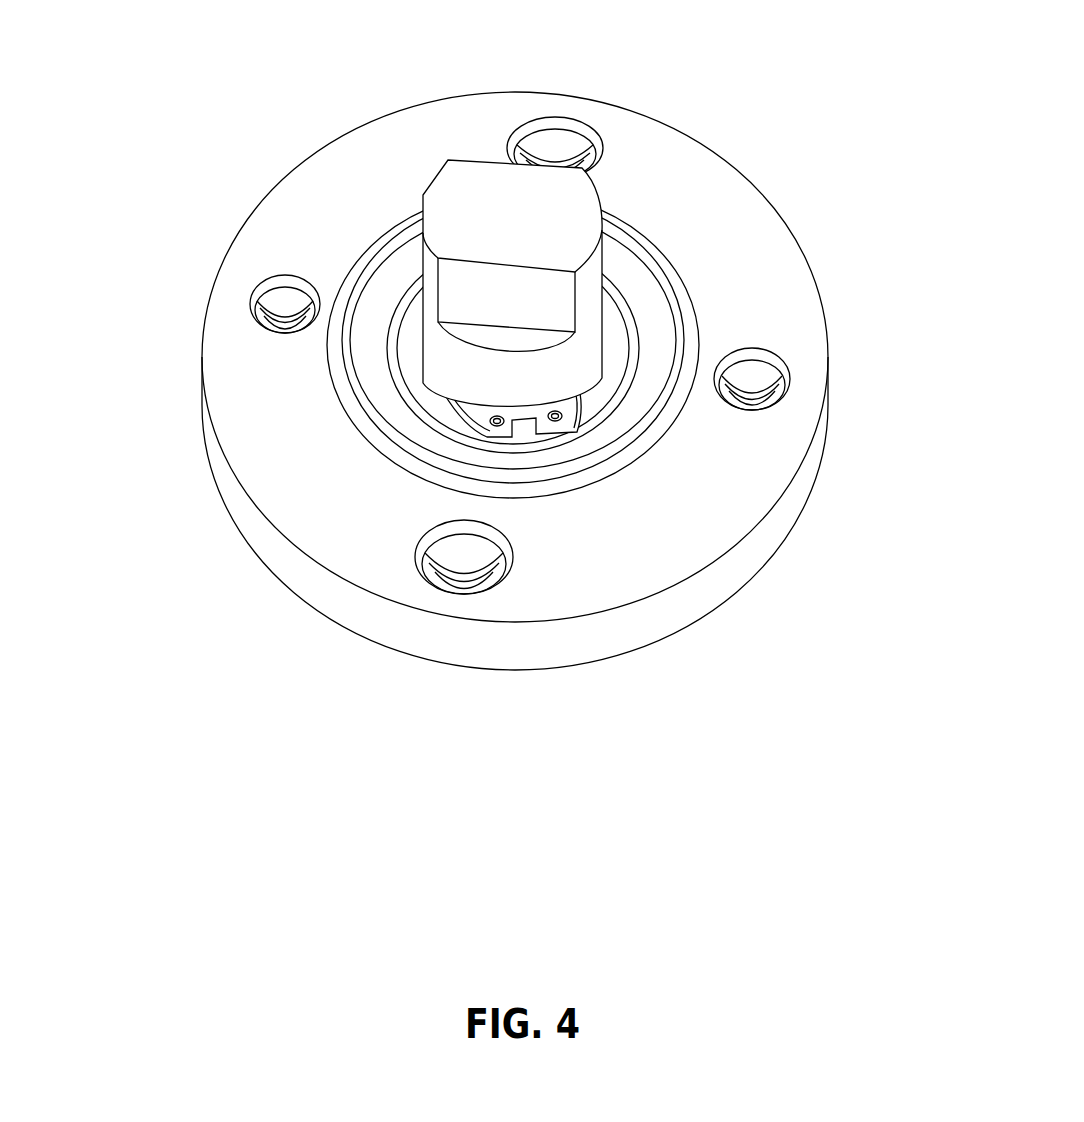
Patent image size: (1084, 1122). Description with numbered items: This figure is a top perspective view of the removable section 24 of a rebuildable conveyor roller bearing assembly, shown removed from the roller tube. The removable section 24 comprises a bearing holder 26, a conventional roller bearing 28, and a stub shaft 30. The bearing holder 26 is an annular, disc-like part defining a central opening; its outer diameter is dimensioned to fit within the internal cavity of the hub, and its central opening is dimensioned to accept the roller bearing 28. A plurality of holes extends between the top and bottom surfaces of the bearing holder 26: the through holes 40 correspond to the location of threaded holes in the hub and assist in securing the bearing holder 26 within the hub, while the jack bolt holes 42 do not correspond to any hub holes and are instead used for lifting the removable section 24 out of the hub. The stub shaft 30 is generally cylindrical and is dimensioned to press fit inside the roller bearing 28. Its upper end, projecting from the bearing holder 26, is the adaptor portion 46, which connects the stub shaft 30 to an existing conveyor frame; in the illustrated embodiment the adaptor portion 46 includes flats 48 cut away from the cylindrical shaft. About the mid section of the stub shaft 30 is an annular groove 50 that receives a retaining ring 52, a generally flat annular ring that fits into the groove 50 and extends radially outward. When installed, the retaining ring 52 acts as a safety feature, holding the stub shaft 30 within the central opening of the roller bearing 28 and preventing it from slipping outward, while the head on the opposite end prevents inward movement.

The removable section 24 is at (500, 401).
The bearing holder 26 is at (723, 523).
The roller bearing 28 is at (663, 348).
The stub shaft 30 is at (462, 440).
The through holes 40 is at (282, 307).
The jack bolt holes 42 is at (571, 130).
The adaptor portion 46 is at (467, 215).
The flats 48 is at (483, 297).
The annular groove 50 is at (577, 393).
The retaining ring 52 is at (482, 418).